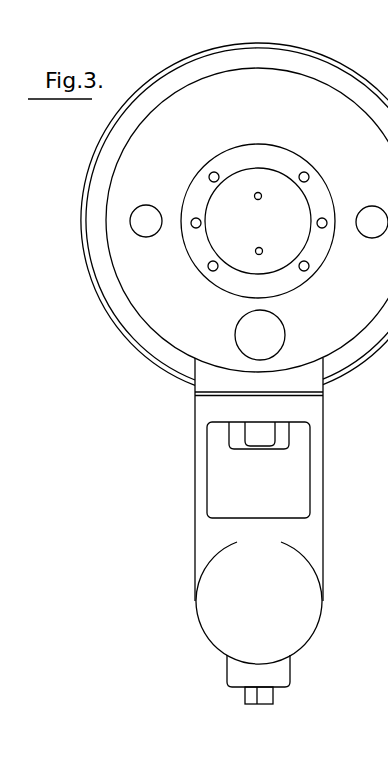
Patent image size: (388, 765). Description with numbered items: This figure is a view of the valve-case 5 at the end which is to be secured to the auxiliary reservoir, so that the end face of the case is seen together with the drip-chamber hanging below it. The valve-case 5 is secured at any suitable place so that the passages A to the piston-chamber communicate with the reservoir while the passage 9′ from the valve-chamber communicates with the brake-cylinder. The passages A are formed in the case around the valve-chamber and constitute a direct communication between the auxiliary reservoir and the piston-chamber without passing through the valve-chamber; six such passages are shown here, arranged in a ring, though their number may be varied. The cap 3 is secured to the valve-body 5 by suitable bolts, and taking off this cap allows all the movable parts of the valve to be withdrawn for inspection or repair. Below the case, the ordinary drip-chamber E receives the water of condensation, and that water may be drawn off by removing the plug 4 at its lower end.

The cap 3 is at (108, 131).
The valve-case 5 is at (247, 220).
The passages A is at (209, 269).
The passage 9′ is at (266, 333).
The drip-chamber E is at (218, 590).
The plug 4 is at (245, 698).